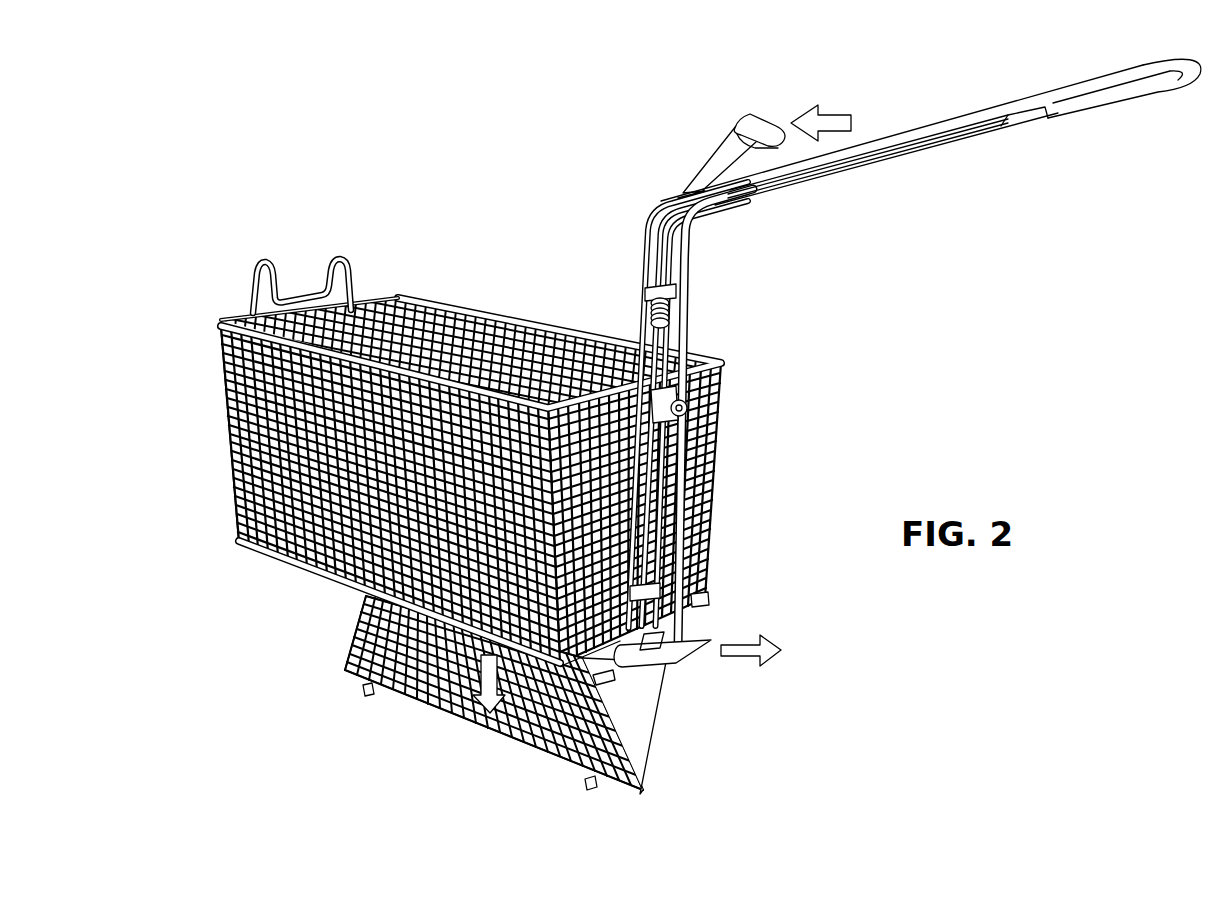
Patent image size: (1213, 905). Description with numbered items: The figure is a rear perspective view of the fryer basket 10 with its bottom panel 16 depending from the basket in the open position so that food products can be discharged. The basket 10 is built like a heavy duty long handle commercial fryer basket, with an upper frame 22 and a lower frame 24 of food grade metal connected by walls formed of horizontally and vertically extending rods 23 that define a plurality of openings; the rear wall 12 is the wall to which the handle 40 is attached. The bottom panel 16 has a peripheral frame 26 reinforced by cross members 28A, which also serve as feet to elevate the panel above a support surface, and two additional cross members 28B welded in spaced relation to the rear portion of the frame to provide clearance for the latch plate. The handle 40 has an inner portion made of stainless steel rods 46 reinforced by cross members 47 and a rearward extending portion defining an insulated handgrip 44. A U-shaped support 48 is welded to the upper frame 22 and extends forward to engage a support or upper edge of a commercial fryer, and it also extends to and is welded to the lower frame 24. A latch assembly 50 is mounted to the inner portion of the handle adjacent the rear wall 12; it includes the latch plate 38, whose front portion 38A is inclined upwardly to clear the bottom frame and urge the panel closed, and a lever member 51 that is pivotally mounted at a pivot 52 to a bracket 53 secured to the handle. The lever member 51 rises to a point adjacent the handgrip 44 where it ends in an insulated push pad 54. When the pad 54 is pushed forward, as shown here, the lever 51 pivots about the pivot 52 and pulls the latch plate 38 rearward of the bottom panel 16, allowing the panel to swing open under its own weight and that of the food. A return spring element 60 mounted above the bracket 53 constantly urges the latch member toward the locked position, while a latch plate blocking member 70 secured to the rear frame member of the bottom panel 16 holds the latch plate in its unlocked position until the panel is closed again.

The fryer basket 10 is at (502, 262).
The rear wall 12 is at (672, 522).
The bottom panel 16 is at (423, 694).
The upper frame 22 is at (715, 360).
The rods 23 is at (714, 384).
The lower frame 24 is at (327, 570).
The peripheral frame 26 is at (467, 717).
The cross members 28A is at (360, 684).
The additional cross members 28B is at (708, 597).
The latch plate 38 is at (668, 654).
The front portion of latch plate 38A is at (652, 623).
The handle 40 is at (857, 167).
The handgrip 44 is at (957, 105).
The rods 46 is at (636, 258).
The cross members 47 is at (672, 281).
The U-shaped support 48 is at (338, 258).
The latch assembly 50 is at (690, 178).
The lever member 51 is at (700, 496).
The pivot 52 is at (675, 421).
The bracket 53 is at (707, 381).
The push pad 54 is at (752, 112).
The return spring element 60 is at (665, 311).
The latch plate blocking member 70 is at (642, 707).